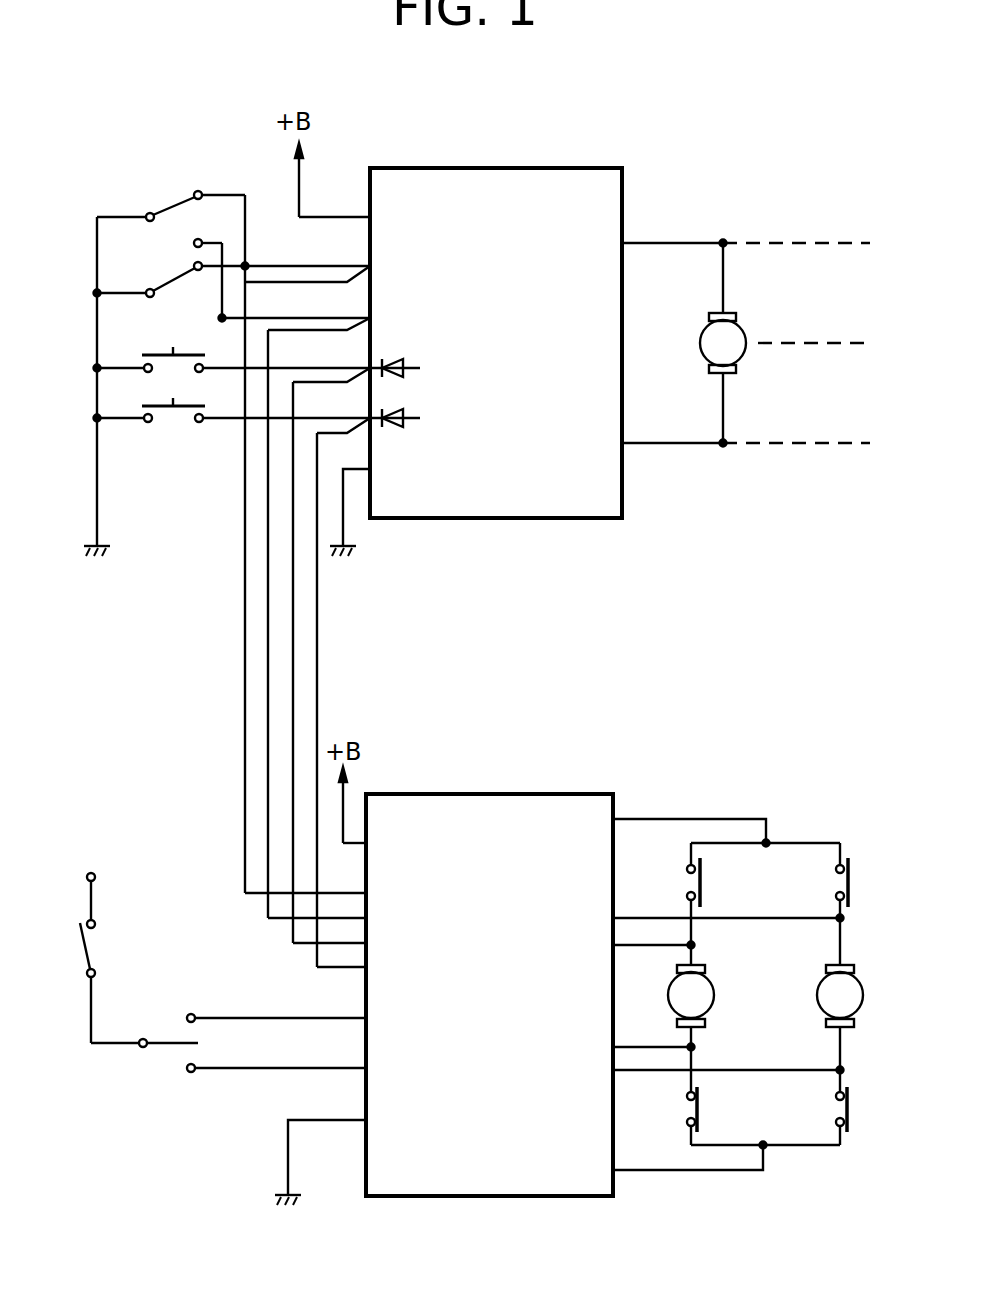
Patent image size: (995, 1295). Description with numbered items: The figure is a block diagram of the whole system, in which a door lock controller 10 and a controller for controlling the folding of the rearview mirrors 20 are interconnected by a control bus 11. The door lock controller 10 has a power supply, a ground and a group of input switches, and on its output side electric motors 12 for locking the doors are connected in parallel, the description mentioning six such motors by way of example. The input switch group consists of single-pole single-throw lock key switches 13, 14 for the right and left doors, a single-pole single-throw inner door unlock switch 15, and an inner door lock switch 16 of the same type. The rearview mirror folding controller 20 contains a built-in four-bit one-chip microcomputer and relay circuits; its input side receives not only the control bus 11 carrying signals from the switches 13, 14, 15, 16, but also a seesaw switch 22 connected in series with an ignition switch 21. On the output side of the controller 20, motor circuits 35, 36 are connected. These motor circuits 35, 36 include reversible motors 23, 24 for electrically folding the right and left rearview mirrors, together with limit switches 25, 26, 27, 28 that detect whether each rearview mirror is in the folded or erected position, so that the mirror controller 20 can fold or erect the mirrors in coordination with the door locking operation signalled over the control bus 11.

The door lock controller 10 is at (580, 168).
The control bus 11 is at (325, 693).
The electric motor 12 is at (743, 352).
The lock key switch 13 is at (161, 200).
The lock key switch 14 is at (162, 284).
The inner door unlock switch 15 is at (147, 352).
The inner door lock switch 16 is at (146, 405).
The controller for controlling the folding of the rearview mirrors 20 is at (550, 794).
The ignition switch 21 is at (83, 947).
The seesaw switch 22 is at (163, 1047).
The reversible motor 23 is at (863, 990).
The reversible motor 24 is at (716, 990).
The limit switch 25 is at (850, 875).
The limit switch 26 is at (850, 1097).
The limit switch 27 is at (702, 875).
The limit switch 28 is at (700, 1097).
The motor circuit 35 is at (667, 819).
The motor circuit 36 is at (722, 1173).